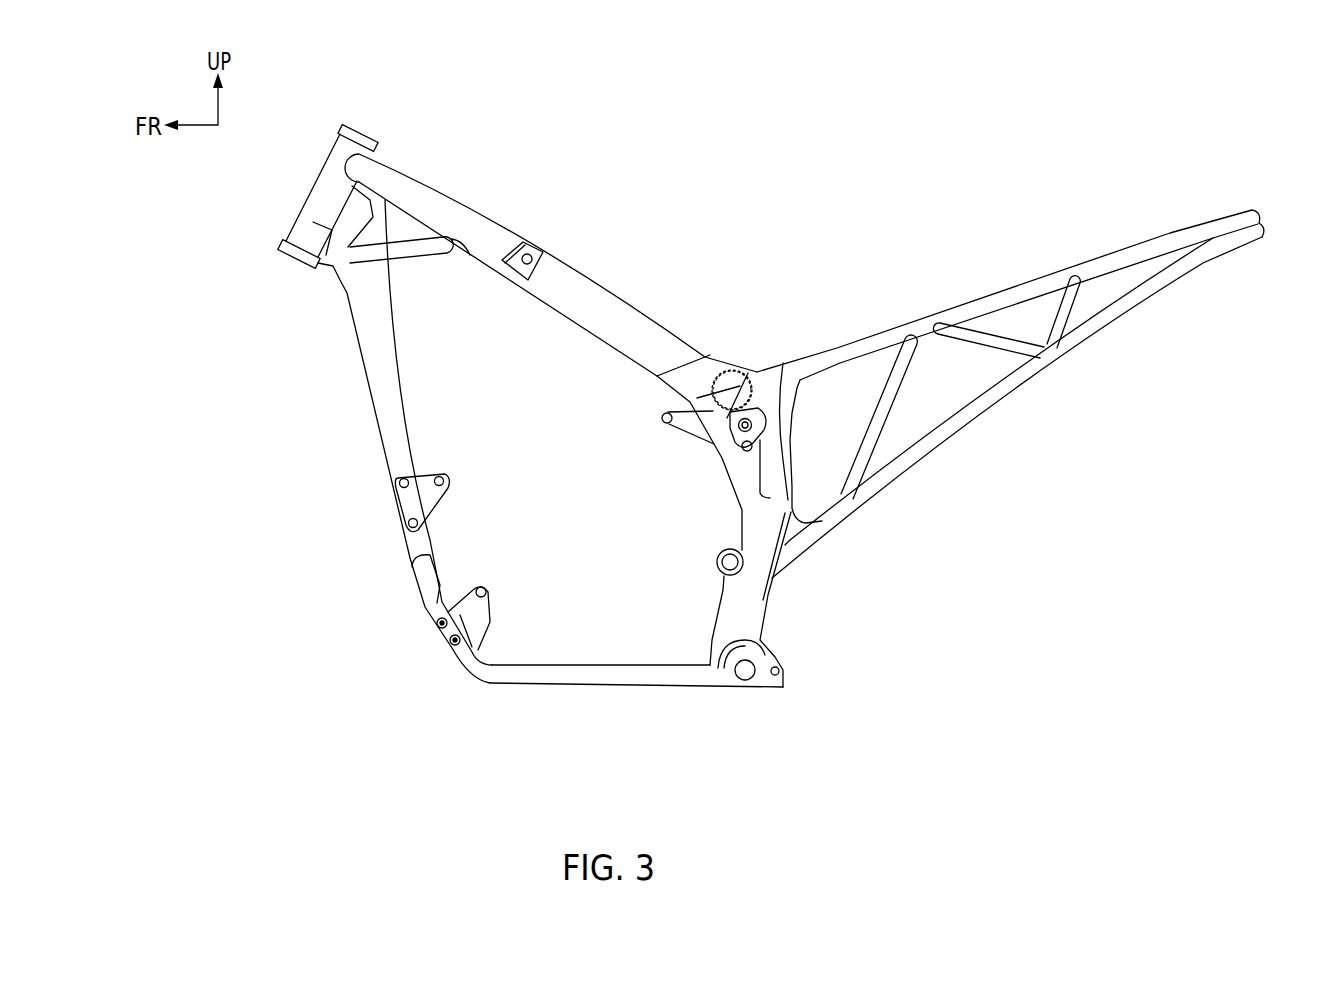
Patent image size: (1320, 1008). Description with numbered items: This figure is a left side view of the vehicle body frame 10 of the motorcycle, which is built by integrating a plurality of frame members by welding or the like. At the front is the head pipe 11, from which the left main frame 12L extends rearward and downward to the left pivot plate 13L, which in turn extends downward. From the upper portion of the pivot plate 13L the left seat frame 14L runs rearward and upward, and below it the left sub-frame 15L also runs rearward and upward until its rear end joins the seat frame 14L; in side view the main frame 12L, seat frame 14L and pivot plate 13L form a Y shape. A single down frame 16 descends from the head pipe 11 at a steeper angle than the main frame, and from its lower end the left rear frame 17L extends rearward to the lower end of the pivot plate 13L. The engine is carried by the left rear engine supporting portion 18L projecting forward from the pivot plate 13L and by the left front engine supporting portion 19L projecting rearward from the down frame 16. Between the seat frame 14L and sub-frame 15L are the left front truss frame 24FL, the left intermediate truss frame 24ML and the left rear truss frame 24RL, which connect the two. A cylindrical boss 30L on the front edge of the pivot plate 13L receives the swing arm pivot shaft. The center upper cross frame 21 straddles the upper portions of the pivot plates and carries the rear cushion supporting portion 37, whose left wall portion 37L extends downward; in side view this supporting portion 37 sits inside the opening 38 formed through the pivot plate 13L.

The vehicle body frame 10 is at (767, 215).
The head pipe 11 is at (322, 192).
The left main frame 12L is at (562, 282).
The left pivot plate 13L is at (777, 490).
The left seat frame 14L is at (925, 325).
The left sub-frame 15L is at (957, 423).
The down frame 16 is at (395, 413).
The left rear frame 17L is at (580, 683).
The left rear engine supporting portion 18L is at (688, 427).
The left front engine supporting portion 19L is at (423, 500).
The center upper cross frame 21 is at (722, 370).
The left front truss frame 24FL is at (887, 417).
The left intermediate truss frame 24ML is at (985, 343).
The left rear truss frame 24RL is at (1068, 303).
The left cylindrical boss 30L is at (745, 572).
The left wall portion 37L is at (783, 363).
The rear cushion supporting portion 37 is at (748, 429).
The opening 38 is at (747, 452).